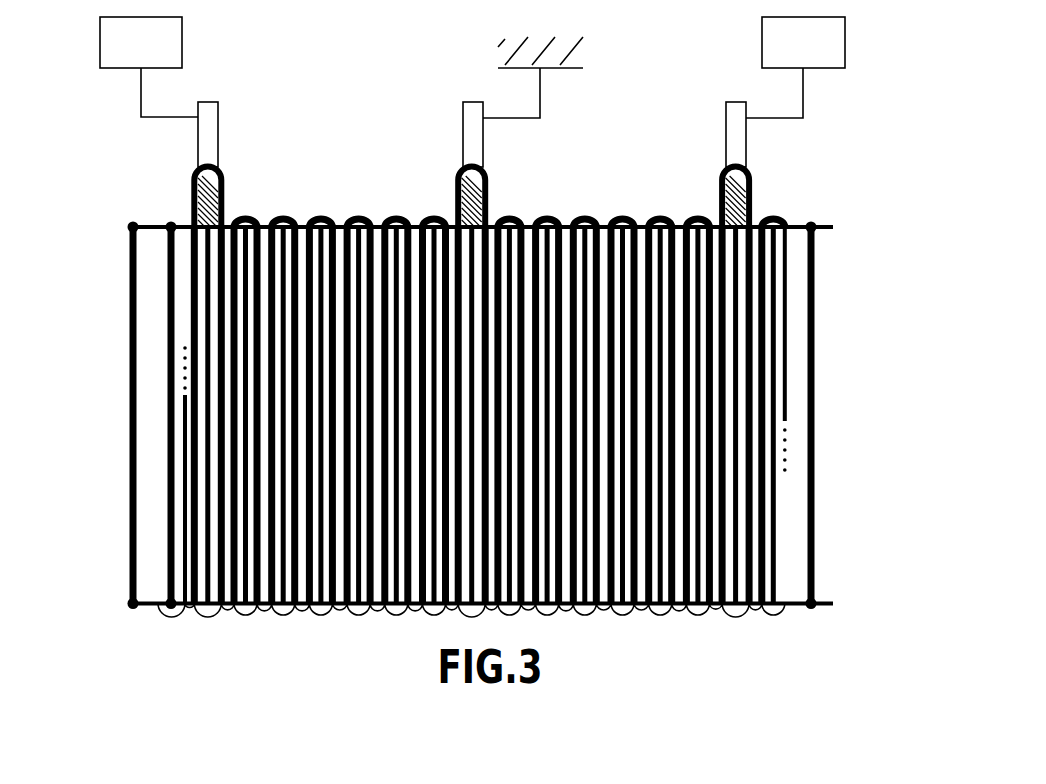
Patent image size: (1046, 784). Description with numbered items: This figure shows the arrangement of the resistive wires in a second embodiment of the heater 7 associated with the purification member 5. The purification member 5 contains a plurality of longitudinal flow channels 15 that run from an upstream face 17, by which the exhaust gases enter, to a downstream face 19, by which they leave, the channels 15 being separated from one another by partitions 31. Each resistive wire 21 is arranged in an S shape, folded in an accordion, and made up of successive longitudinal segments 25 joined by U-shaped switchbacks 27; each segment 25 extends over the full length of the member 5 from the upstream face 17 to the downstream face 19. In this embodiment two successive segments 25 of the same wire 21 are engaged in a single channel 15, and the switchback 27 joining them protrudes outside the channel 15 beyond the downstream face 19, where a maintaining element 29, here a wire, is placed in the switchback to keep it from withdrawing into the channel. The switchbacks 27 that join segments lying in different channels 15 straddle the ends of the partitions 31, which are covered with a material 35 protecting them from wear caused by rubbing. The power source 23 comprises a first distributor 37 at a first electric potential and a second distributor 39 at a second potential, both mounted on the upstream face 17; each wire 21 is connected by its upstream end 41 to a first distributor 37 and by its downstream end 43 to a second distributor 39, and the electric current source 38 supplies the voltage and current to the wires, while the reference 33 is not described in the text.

The purification member 5 is at (108, 400).
The heater 7 is at (108, 166).
The flow channels 15 is at (153, 468).
The upstream face 17 is at (680, 214).
The downstream face 19 is at (800, 618).
The resistive wires 21 is at (372, 245).
The power source 23 is at (822, 97).
The longitudinal segments 25 is at (528, 262).
The switchbacks 27 is at (352, 214).
The maintaining element 29 is at (596, 622).
The partition 31 is at (252, 240).
The top edge 33 is at (826, 224).
The material 35 is at (806, 222).
The first distributor 37 is at (212, 134).
The electric current source 38 is at (472, 67).
The second distributor 39 is at (470, 130).
The upstream end 41 is at (192, 190).
The downstream end 43 is at (460, 192).